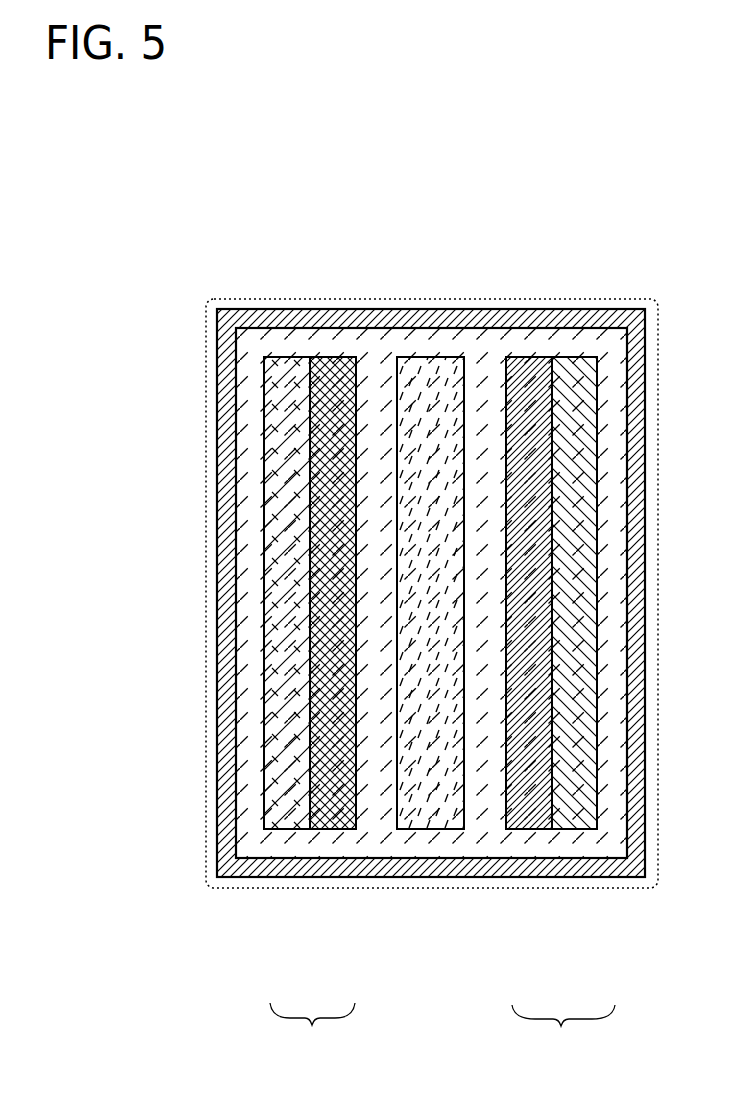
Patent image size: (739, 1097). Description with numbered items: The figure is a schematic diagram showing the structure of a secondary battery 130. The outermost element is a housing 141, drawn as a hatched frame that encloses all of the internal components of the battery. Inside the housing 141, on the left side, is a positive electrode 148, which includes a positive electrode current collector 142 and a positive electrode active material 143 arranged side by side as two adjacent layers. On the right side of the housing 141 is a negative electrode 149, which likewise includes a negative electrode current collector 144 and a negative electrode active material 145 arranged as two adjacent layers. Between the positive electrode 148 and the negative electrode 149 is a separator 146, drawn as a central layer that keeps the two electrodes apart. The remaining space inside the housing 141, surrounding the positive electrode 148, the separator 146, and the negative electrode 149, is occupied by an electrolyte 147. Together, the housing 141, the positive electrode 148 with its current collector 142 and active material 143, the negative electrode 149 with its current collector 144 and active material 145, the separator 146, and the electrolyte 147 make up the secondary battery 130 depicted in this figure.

The secondary battery 130 is at (335, 298).
The housing 141 is at (605, 320).
The electrolyte 147 is at (245, 342).
The positive electrode current collector 142 is at (287, 818).
The positive electrode active material 143 is at (333, 817).
The negative electrode current collector 144 is at (580, 810).
The negative electrode active material 145 is at (528, 807).
The separator 146 is at (430, 807).
The positive electrode 148 is at (312, 1032).
The negative electrode 149 is at (563, 1033).